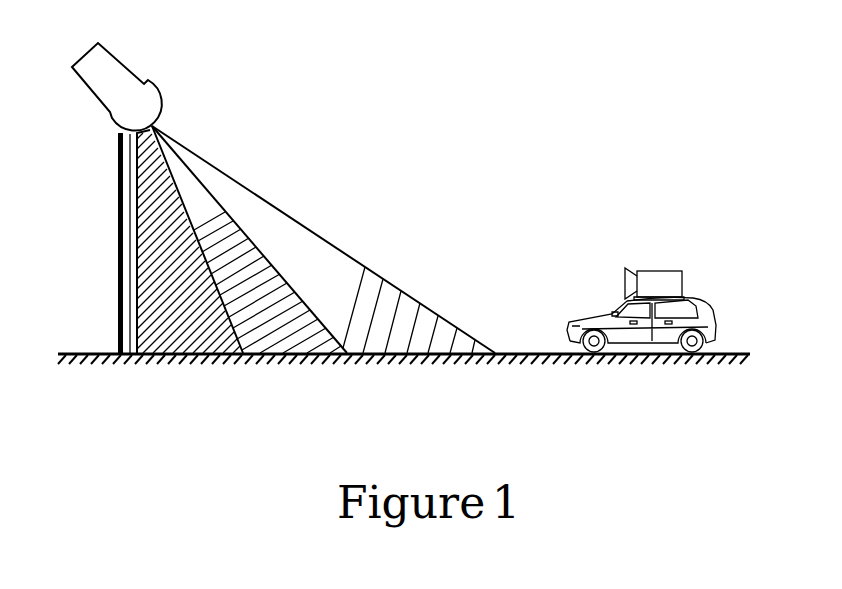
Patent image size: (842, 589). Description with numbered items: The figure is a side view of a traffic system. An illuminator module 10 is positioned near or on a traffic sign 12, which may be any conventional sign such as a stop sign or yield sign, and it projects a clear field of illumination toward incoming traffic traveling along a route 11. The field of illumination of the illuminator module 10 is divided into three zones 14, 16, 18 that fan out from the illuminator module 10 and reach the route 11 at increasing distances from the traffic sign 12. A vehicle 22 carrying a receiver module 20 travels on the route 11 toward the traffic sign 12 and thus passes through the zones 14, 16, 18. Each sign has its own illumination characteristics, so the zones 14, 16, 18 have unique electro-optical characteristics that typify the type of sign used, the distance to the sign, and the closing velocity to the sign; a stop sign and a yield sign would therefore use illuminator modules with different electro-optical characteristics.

The illuminator module 10 is at (163, 73).
The route 11 is at (520, 378).
The traffic sign 12 is at (90, 185).
The FOI zone 14 is at (173, 330).
The FOI zone 16 is at (292, 330).
The FOI zone 18 is at (385, 333).
The receiver module 20 is at (657, 270).
The vehicle 22 is at (702, 292).